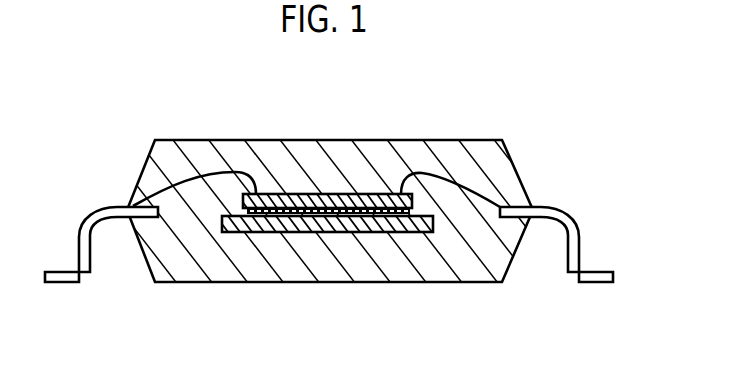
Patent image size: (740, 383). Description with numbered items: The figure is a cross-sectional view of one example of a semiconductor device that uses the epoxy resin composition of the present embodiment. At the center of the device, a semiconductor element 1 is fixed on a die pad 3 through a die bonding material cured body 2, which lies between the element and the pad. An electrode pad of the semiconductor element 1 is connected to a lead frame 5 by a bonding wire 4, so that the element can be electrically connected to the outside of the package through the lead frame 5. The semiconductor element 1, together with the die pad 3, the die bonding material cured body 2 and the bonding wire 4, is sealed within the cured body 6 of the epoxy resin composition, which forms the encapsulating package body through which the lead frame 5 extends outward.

The semiconductor element 1 is at (322, 194).
The die bonding material cured body 2 is at (252, 212).
The die pad 3 is at (355, 233).
The bonding wire 4 is at (463, 181).
The lead frame 5 is at (556, 218).
The cured body 6 is at (212, 138).